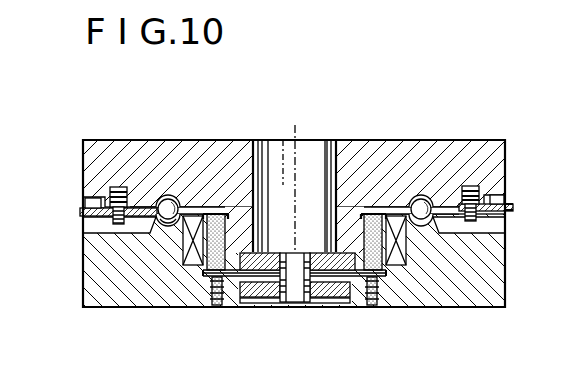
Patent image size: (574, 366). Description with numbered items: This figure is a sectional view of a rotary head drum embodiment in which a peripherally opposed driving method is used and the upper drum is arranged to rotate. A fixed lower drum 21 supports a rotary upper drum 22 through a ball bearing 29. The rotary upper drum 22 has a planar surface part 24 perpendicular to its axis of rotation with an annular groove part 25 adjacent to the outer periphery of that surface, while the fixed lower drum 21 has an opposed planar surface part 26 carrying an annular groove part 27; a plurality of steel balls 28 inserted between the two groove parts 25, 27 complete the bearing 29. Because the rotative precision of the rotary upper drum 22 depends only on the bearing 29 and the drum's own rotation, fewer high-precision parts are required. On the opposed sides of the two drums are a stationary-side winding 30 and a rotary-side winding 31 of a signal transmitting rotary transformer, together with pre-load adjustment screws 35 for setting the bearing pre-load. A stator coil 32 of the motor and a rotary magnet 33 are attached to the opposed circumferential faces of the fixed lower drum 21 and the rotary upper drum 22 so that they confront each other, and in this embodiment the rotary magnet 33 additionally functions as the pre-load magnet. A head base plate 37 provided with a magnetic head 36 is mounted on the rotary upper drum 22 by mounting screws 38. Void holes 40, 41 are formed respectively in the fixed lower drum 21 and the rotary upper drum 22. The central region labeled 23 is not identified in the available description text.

The fixed lower drum 21 is at (97, 290).
The rotary upper drum 22 is at (463, 160).
The central bore 23 is at (284, 140).
The planar surface part 24 is at (145, 180).
The annular groove part 25 is at (163, 200).
The planar surface part 26 is at (160, 221).
The annular groove part 27 is at (173, 219).
The steel balls 28 is at (176, 203).
The ball bearing 29 is at (431, 221).
The stationary-side winding 30 is at (243, 270).
The rotary-side winding 31 is at (292, 272).
The stator coil 32 is at (193, 263).
The rotary magnet 33 is at (219, 213).
The pre-load adjustment screws 35 is at (217, 292).
The magnetic head 36 is at (82, 206).
The head base plate 37 is at (82, 211).
The mounting screws 38 is at (108, 222).
The void hole 40 is at (308, 285).
The void hole 41 is at (316, 165).